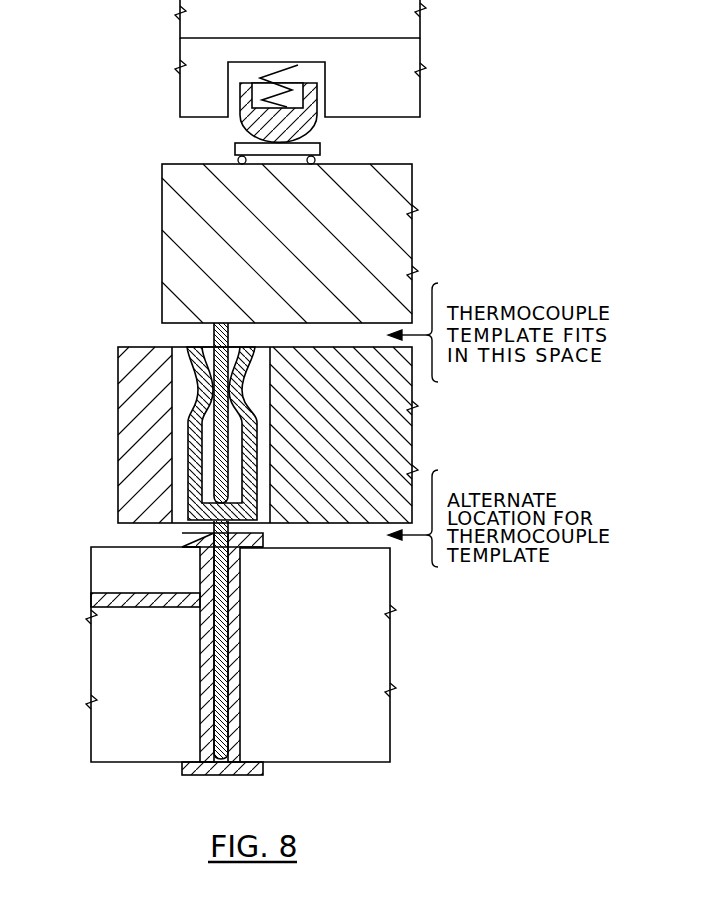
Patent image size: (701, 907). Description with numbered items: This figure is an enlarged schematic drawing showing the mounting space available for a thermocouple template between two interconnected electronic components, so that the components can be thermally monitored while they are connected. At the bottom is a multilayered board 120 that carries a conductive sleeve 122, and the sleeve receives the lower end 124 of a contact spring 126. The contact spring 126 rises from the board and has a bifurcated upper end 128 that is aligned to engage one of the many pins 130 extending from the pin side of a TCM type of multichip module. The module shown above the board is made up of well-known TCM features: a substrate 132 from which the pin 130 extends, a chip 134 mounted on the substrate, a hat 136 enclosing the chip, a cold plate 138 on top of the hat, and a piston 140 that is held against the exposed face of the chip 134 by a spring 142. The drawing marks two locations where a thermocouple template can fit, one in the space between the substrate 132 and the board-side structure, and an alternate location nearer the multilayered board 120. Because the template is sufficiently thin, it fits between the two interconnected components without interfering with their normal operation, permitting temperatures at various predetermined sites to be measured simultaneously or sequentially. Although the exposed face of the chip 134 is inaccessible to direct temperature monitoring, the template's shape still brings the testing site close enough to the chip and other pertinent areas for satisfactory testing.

The multilayered board 120 is at (241, 654).
The conductive sleeve 122 is at (240, 703).
The lower end 124 is at (218, 664).
The contact spring 126 is at (228, 533).
The bifurcated upper end 128 is at (198, 388).
The pin 130 is at (214, 458).
The substrate 132 is at (162, 228).
The chip 134 is at (320, 150).
The hat 136 is at (300, 77).
The cold plate 138 is at (300, 19).
The piston 140 is at (240, 125).
The spring 142 is at (298, 65).